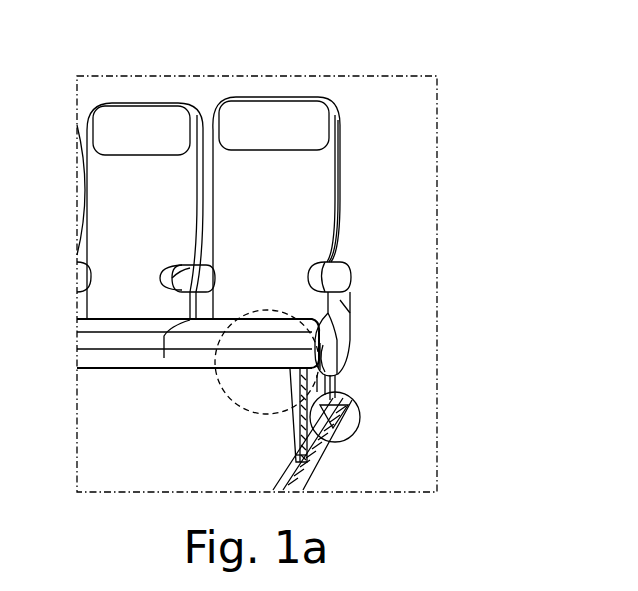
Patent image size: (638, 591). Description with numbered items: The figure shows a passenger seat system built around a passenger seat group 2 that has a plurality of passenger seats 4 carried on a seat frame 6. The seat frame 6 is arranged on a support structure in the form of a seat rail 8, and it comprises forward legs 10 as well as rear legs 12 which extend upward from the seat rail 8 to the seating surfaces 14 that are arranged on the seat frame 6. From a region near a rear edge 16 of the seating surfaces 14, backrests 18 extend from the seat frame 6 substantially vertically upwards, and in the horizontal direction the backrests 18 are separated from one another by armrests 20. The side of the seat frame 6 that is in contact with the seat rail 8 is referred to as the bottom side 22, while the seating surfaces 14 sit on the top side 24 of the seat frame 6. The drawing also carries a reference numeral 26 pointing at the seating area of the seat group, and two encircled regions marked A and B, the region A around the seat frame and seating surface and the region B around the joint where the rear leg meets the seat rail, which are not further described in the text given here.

The passenger seat group 2 is at (321, 167).
The passenger seat 4 is at (341, 221).
The seat frame 6 is at (292, 424).
The seat rail 8 is at (318, 462).
The forward leg 10 is at (298, 440).
The rear leg 12 is at (337, 382).
The seating surface 14 is at (198, 351).
The rear edge 16 is at (359, 322).
The backrest 18 is at (323, 183).
The armrest 20 is at (188, 278).
The bottom side 22 is at (362, 422).
The top side 24 is at (357, 353).
The table top 26 is at (215, 337).
The detail A is at (240, 405).
The detail B is at (356, 405).